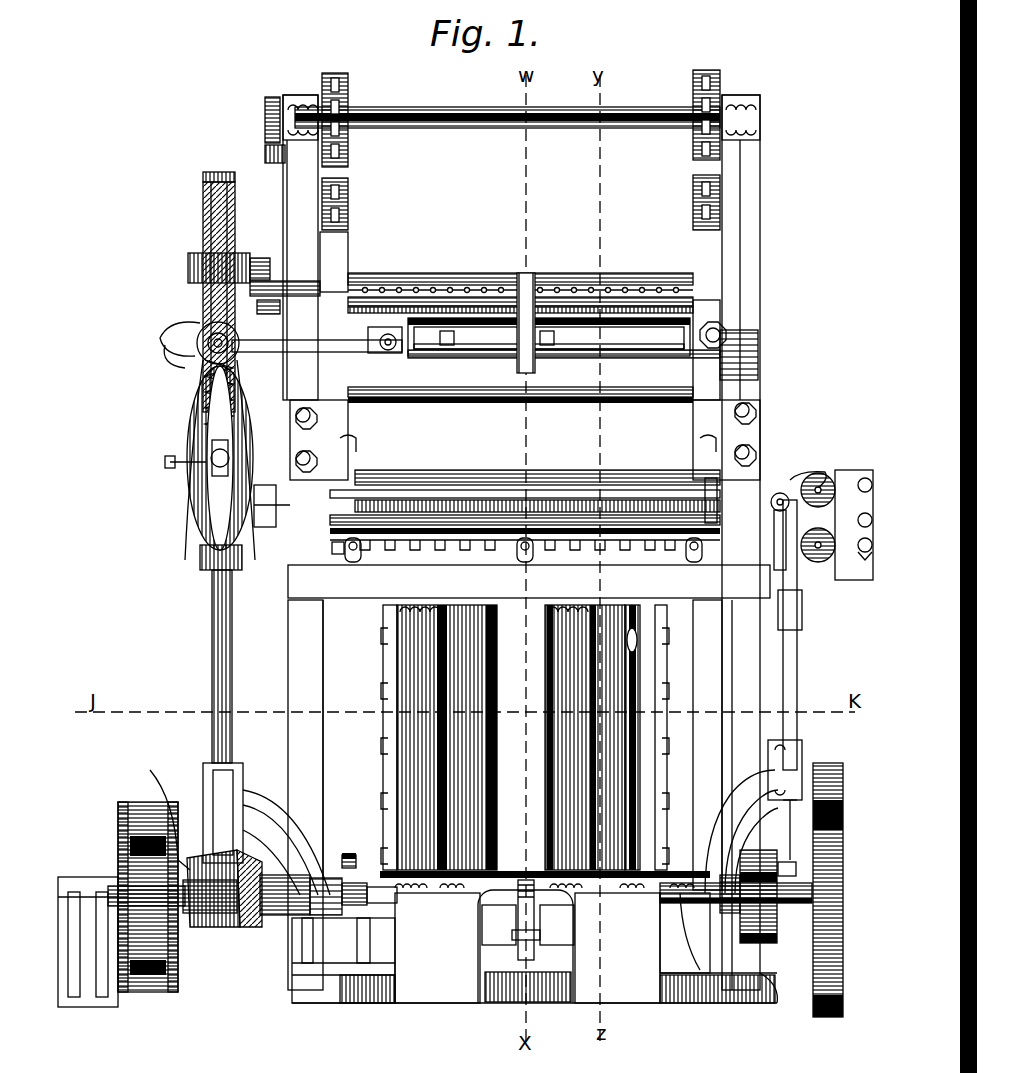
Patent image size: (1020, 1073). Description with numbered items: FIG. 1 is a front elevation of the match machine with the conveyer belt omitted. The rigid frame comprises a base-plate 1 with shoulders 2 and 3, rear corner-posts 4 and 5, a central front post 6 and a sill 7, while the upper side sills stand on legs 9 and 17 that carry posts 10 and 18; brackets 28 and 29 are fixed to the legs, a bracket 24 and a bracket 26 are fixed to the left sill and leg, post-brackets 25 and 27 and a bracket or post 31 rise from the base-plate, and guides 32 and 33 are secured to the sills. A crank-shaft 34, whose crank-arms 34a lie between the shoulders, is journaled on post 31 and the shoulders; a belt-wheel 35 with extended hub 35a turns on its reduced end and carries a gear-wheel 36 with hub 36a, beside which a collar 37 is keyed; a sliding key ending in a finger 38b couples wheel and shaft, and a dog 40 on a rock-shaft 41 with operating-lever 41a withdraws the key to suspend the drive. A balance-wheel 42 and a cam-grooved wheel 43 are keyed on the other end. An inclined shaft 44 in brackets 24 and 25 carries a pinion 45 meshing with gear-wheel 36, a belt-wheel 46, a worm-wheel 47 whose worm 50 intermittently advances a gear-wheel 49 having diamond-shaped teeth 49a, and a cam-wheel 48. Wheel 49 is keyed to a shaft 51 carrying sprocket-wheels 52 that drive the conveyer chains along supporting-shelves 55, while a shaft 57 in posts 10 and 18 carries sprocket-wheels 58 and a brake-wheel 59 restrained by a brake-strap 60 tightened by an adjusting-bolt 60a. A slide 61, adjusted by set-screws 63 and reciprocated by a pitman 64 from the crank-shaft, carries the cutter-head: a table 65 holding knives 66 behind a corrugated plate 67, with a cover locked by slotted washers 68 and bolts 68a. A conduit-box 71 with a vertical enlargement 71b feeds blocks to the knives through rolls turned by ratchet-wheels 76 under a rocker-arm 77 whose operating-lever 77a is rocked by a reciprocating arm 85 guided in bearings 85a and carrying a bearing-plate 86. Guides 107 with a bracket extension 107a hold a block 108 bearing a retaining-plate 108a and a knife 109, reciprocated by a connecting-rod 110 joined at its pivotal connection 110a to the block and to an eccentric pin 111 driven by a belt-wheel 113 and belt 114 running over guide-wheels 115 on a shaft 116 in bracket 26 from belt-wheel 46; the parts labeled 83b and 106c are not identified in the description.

The base-plate 1 is at (527, 982).
The shoulder 2 is at (432, 988).
The shoulder 3 is at (618, 980).
The rear corner-post 4 is at (290, 703).
The rear corner-post 5 is at (733, 686).
The central front post 6 is at (392, 772).
The sill 7 is at (360, 596).
The leg 9 is at (765, 470).
The post 10 is at (760, 215).
The leg 17 is at (297, 570).
The post 18 is at (300, 185).
The bracket 24 is at (240, 380).
The post-bracket 25 is at (245, 795).
The bracket 26 is at (268, 515).
The post-bracket 27 is at (715, 812).
The bracket 28 is at (730, 365).
The bracket 29 is at (340, 260).
The bracket or post 31 is at (110, 990).
The guide 32 is at (700, 470).
The guide 33 is at (334, 490).
The crank-shaft 34 is at (118, 878).
The crank-arms 34a is at (490, 928).
The belt-wheel 35 is at (125, 800).
The extended hub 35a is at (200, 913).
The gear-wheel 36 is at (228, 935).
The extended hub 36a is at (265, 930).
The collar 37 is at (328, 915).
The finger 38b is at (356, 855).
The dog 40 is at (340, 858).
The rock-shaft 41 is at (505, 855).
The operating-lever 41a is at (640, 716).
The balance-wheel 42 is at (824, 763).
The wheel 43 is at (760, 945).
The inclined shaft 44 is at (212, 666).
The pinion 45 is at (182, 800).
The belt-wheel 46 is at (207, 570).
The worm-wheel 47 is at (195, 378).
The cam-wheel 48 is at (200, 285).
The gear-wheel 49 is at (203, 198).
The diamond-shaped teeth 49a is at (215, 172).
The worm 50 is at (197, 343).
The shaft 51 is at (275, 281).
The sprocket-wheels 52 is at (350, 212).
The supporting-shelves 55 is at (528, 438).
The shaft 57 is at (523, 128).
The sprocket-wheels 58 is at (350, 95).
The brake-wheel 59 is at (265, 102).
The brake-strap 60 is at (272, 95).
The adjusting-bolt 60a is at (266, 150).
The slide 61 is at (588, 555).
The set-screws 63 is at (670, 678).
The pitman 64 is at (515, 945).
The table 65 is at (688, 560).
The knives 66 is at (410, 540).
The corrugated plate 67 is at (505, 555).
The slotted washers 68 is at (362, 555).
The bolts or screws 68a is at (338, 556).
The conduit-box 71 is at (702, 500).
The vertical enlargement 71b is at (800, 470).
The ratchet-wheel 76 is at (825, 473).
The rocker-arm 77 is at (860, 486).
The operating-lever 77a is at (845, 550).
The clutch 83b is at (794, 873).
The reciprocating arm 85 is at (797, 680).
The guide-bearings 85a is at (795, 620).
The bearing-plate 86 is at (770, 509).
The nut 106c is at (262, 258).
The guides 107 is at (448, 358).
The bracket extension 107a is at (292, 340).
The block 108 is at (520, 314).
The retaining-plate 108a is at (592, 358).
The saw or knife 109 is at (708, 329).
The connecting-rod 110 is at (386, 350).
The pivotal connection 110a is at (400, 353).
The eccentric pin 111 is at (175, 328).
The belt-wheel 113 is at (178, 365).
The belt 114 is at (188, 447).
The guide-wheels 115 is at (186, 462).
The shaft 116 is at (170, 464).